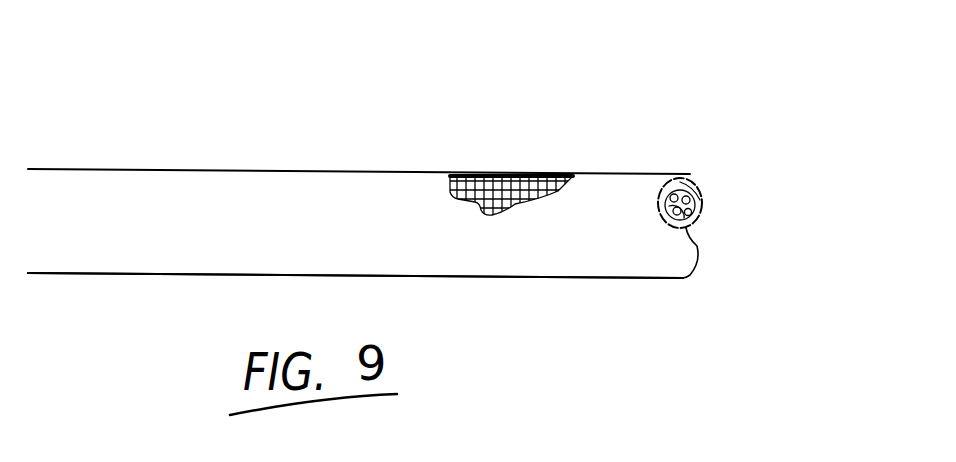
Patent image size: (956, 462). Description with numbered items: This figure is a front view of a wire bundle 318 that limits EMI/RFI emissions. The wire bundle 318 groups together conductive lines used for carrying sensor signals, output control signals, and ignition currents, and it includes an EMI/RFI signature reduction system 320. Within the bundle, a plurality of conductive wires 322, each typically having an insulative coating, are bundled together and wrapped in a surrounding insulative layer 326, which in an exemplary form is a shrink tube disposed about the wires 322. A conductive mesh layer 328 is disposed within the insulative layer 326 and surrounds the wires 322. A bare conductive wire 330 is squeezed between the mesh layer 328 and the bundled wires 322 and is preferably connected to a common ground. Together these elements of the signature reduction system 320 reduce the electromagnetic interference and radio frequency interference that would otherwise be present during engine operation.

The wire bundle 318 is at (280, 151).
The EMI/RFI signature reduction system 320 is at (517, 162).
The conductive wires 322 is at (691, 223).
The insulative layer 326 is at (607, 268).
The conductive mesh layer 328 is at (458, 172).
The bare conductive wire 330 is at (681, 187).